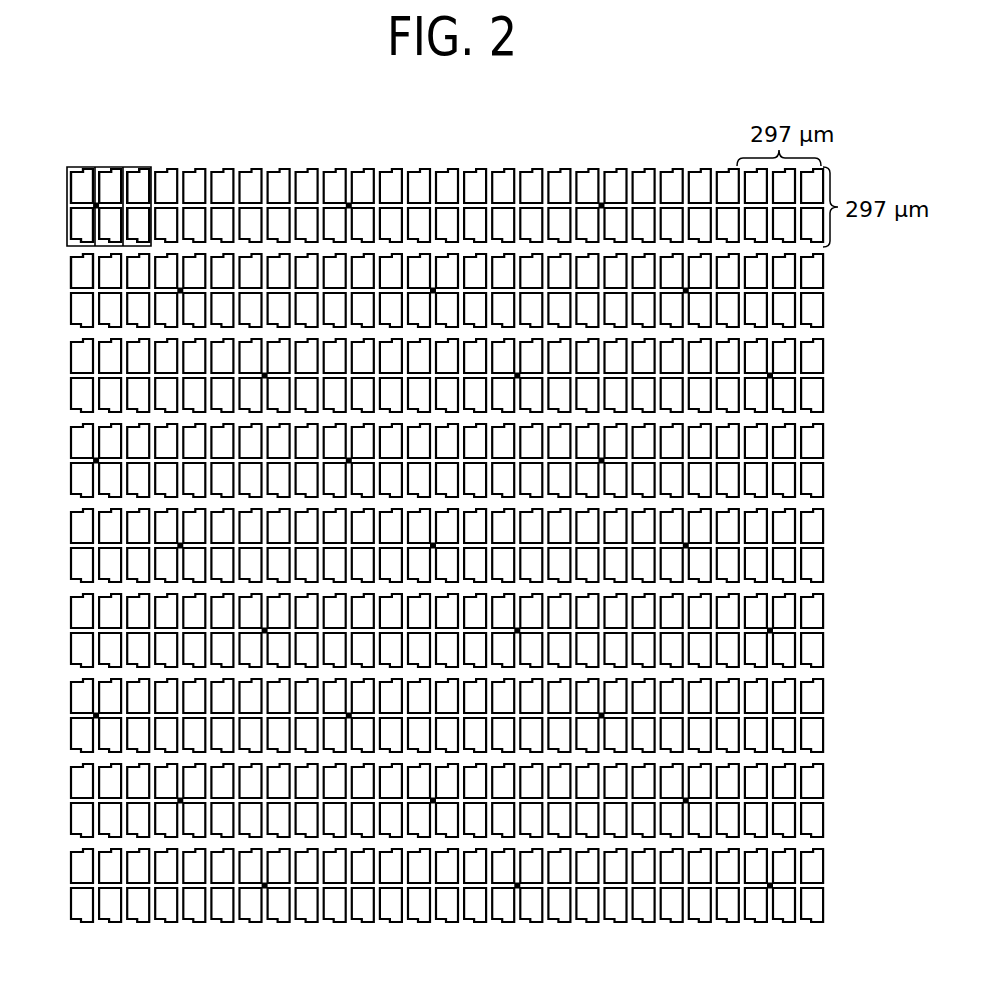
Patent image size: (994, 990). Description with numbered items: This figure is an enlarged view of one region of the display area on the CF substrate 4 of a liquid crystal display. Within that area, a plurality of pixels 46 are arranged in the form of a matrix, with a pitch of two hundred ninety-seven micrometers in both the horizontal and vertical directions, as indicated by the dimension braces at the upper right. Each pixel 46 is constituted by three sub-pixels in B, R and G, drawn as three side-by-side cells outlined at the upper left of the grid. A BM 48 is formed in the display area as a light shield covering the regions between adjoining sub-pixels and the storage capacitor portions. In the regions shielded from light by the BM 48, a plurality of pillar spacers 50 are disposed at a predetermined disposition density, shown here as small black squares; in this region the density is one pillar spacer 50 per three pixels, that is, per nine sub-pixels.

The CF substrate 4 is at (268, 133).
The pixel 46 is at (63, 191).
The BM 48 is at (97, 268).
The pillar spacer 50 is at (178, 294).
The blue sub-pixel B is at (81, 167).
The red sub-pixel R is at (110, 167).
The green sub-pixel G is at (139, 167).